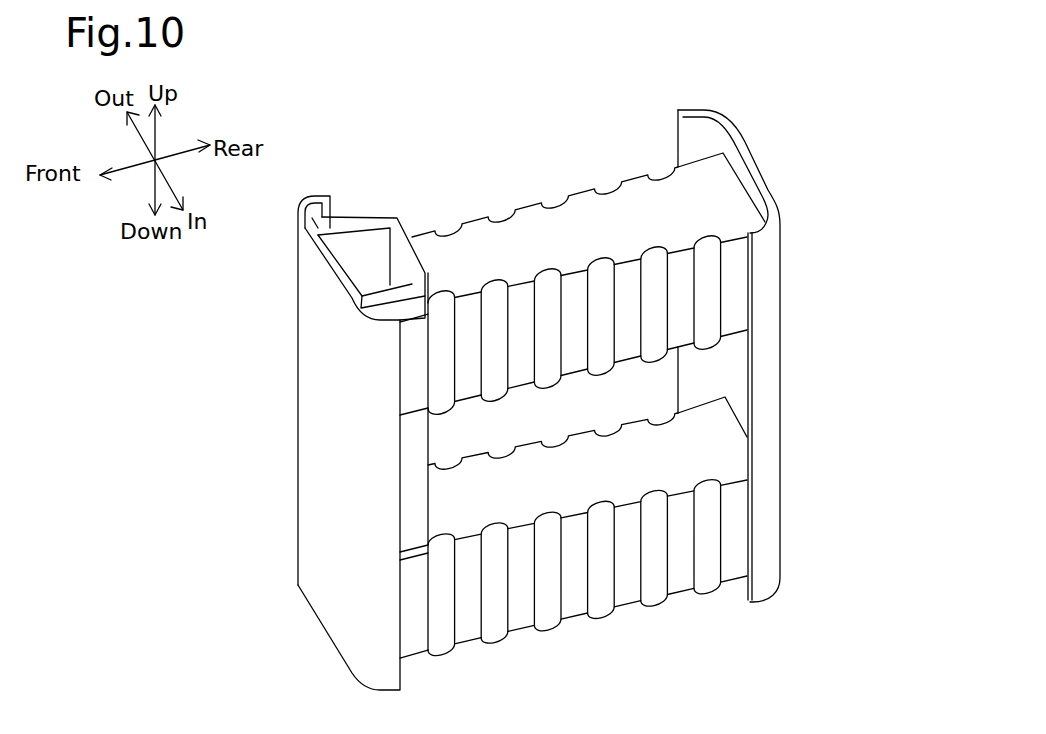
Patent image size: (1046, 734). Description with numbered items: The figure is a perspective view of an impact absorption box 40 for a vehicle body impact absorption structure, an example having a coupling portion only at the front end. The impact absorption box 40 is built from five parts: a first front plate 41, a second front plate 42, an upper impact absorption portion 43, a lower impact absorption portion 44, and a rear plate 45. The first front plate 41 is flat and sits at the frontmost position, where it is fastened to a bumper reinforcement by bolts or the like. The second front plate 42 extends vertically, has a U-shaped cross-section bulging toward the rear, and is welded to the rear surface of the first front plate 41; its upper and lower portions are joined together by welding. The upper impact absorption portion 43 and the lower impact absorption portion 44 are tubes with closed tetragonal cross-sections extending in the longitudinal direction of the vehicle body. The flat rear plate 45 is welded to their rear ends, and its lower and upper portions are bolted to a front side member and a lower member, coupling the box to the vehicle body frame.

The impact absorption box 40 is at (561, 172).
The first front plate 41 is at (299, 284).
The second front plate 42 is at (363, 216).
The upper impact absorption portion 43 is at (483, 220).
The lower impact absorption portion 44 is at (624, 594).
The rear plate 45 is at (771, 262).